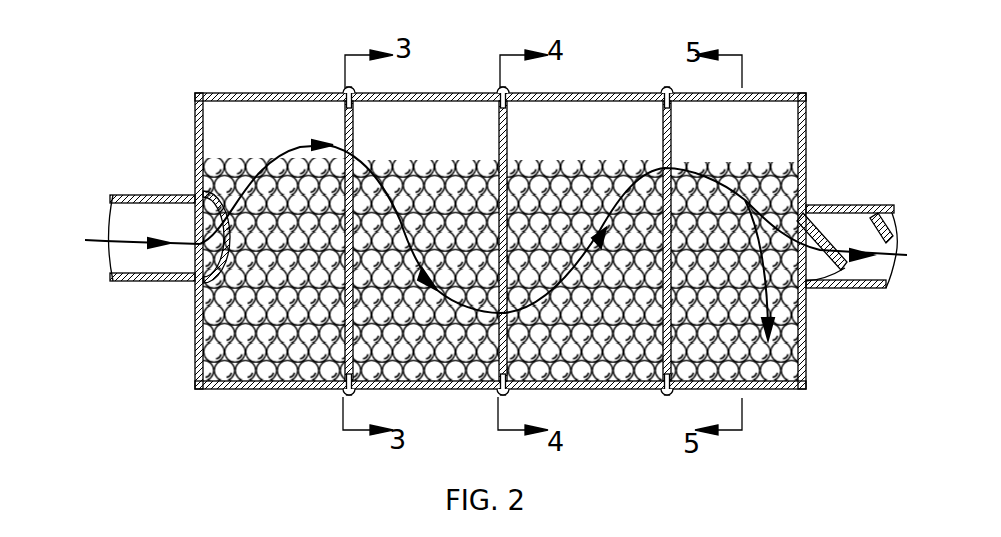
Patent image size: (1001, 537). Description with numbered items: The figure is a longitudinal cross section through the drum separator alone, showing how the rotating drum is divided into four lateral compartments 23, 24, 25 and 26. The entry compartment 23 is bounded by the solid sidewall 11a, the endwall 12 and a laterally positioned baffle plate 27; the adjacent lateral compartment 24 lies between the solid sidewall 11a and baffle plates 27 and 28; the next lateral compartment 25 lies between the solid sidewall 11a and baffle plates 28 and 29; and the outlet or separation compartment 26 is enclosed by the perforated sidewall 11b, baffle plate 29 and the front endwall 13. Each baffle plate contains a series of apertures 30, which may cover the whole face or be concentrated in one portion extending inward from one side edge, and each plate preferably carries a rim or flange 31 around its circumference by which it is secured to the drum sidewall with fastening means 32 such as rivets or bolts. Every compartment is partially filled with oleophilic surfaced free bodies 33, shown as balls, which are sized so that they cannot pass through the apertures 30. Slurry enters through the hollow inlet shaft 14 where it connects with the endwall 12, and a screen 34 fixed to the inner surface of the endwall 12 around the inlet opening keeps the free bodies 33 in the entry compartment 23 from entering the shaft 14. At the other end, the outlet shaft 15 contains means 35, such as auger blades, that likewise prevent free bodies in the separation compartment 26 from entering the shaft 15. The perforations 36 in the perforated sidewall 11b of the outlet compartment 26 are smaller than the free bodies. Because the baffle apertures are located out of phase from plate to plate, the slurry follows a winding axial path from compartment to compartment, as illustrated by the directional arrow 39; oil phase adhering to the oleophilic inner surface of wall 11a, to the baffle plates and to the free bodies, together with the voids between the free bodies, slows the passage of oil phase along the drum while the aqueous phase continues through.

The solid sidewall 11a is at (258, 92).
The perforated sidewall 11b is at (805, 95).
The endwall 12 is at (195, 130).
The front endwall 13 is at (806, 140).
The hollow inlet shaft 14 is at (160, 286).
The outlet shaft 15 is at (838, 204).
The entry compartment 23 is at (226, 110).
The lateral compartment 24 is at (453, 99).
The lateral compartment 25 is at (609, 156).
The outlet or separation compartment 26 is at (783, 118).
The baffle plate 27 is at (353, 131).
The baffle plate 28 is at (497, 150).
The baffle plate 29 is at (671, 150).
The apertures 30 is at (345, 130).
The rim or flange 31 is at (356, 105).
The fastening means 32 is at (353, 92).
The oleophilic surfaced free bodies 33 is at (205, 366).
The screen 34 is at (208, 250).
The means 35 is at (838, 272).
The perforations 36 is at (768, 97).
The directional arrow 39 is at (172, 198).